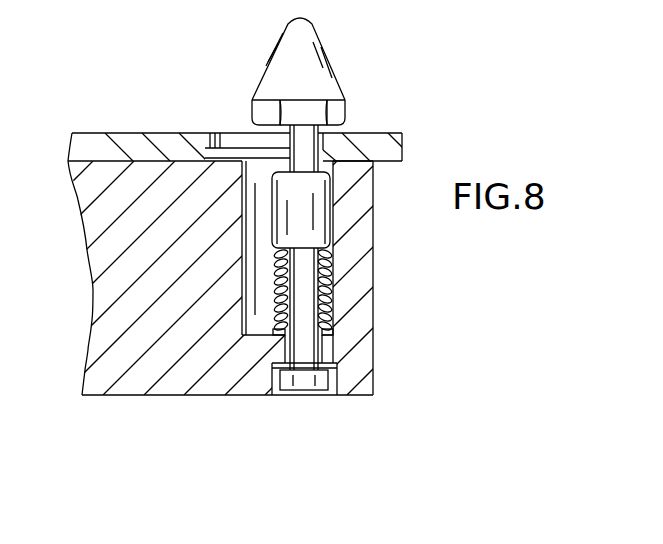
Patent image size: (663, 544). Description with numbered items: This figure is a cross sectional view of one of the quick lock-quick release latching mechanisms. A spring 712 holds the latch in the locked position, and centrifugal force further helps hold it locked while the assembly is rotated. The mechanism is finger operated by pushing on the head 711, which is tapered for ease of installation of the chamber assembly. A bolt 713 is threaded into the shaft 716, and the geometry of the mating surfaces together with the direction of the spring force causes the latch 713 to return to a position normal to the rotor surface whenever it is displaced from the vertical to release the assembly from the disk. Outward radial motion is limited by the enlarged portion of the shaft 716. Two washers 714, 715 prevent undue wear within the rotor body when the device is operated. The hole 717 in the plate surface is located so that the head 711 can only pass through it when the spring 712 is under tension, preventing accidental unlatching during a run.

The head 711 is at (332, 55).
The hole 717 is at (337, 132).
The shaft 716 is at (333, 212).
The spring 712 is at (331, 302).
The washer 714 is at (328, 340).
The washer 715 is at (330, 372).
The bolt 713 is at (303, 390).